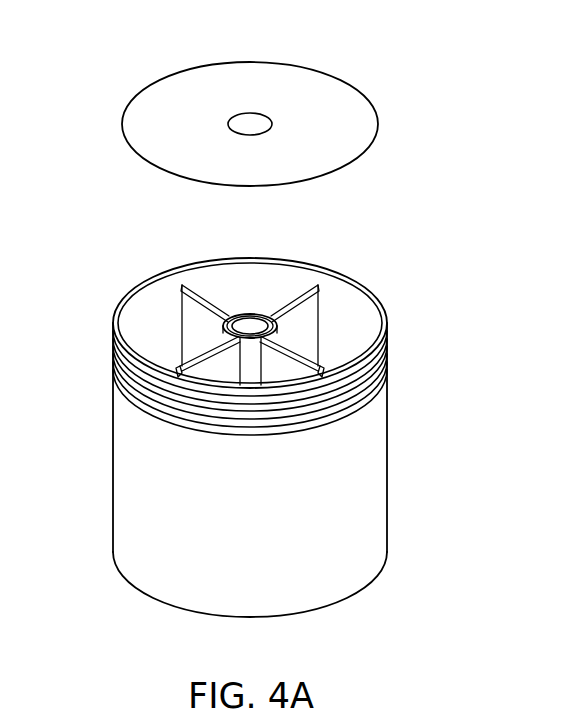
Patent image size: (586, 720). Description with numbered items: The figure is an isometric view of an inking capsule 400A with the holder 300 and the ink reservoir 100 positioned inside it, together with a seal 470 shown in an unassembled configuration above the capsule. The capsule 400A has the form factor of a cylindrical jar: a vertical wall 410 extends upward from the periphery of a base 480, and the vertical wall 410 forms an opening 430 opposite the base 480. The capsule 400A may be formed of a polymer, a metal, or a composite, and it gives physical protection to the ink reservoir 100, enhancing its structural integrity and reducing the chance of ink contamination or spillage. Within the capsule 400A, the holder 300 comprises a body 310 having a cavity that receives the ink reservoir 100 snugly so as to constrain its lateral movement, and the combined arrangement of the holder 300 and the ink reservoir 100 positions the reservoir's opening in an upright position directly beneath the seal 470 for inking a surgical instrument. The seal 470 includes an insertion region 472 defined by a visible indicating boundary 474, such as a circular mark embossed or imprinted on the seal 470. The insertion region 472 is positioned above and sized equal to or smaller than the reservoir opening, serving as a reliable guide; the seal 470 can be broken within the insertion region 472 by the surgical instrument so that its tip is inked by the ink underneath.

The ink reservoir 100 is at (250, 326).
The holder 300 is at (203, 292).
The body 310 is at (182, 305).
The inking capsule 400A is at (400, 257).
The vertical wall 410 is at (387, 462).
The opening 430 is at (335, 270).
The seal 470 is at (378, 108).
The insertion region 472 is at (251, 123).
The indicating boundary 474 is at (273, 124).
The base 480 is at (352, 595).